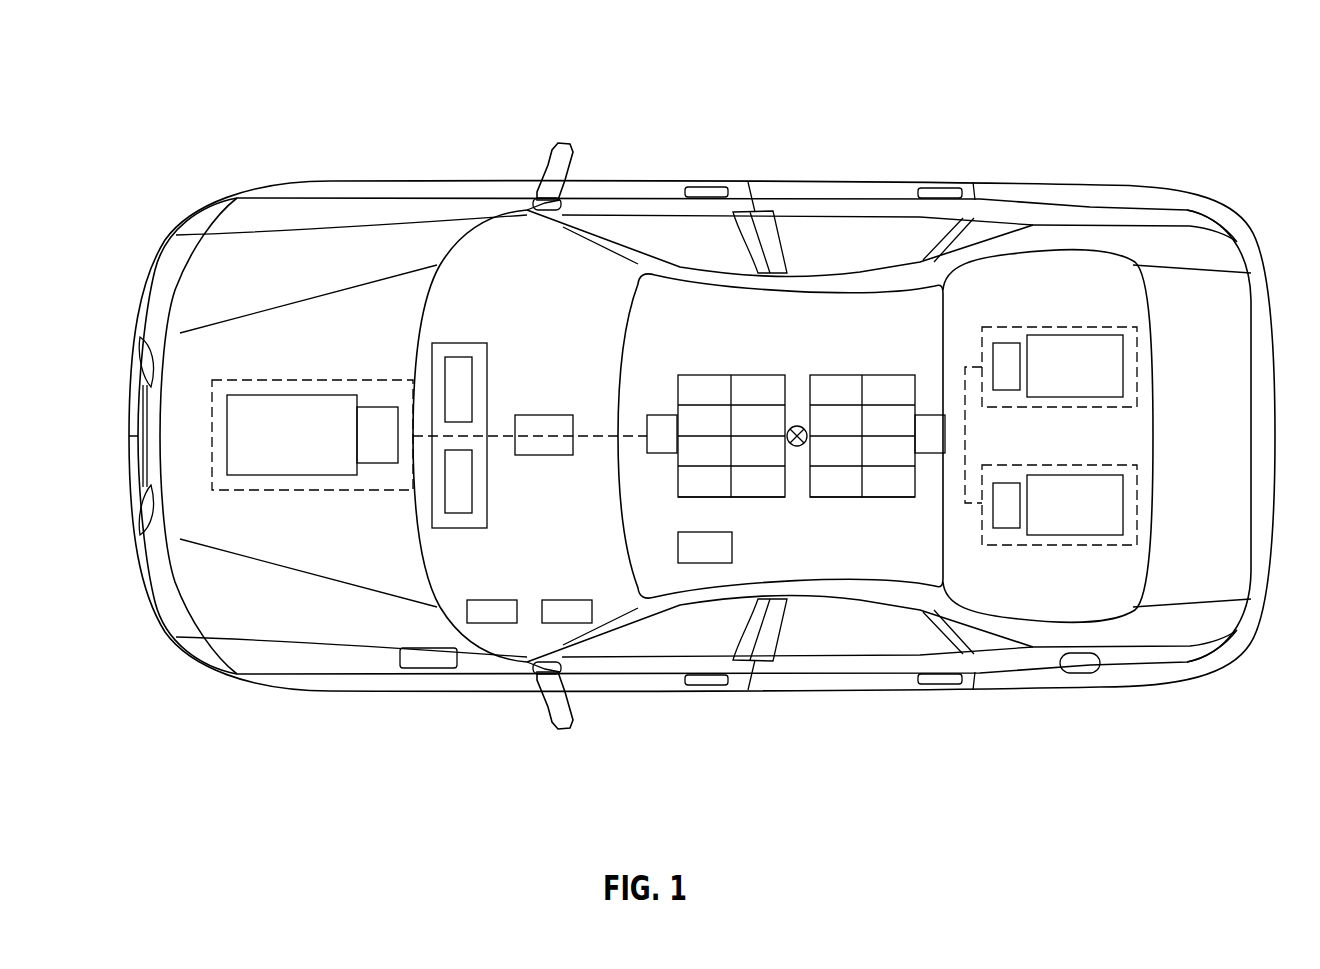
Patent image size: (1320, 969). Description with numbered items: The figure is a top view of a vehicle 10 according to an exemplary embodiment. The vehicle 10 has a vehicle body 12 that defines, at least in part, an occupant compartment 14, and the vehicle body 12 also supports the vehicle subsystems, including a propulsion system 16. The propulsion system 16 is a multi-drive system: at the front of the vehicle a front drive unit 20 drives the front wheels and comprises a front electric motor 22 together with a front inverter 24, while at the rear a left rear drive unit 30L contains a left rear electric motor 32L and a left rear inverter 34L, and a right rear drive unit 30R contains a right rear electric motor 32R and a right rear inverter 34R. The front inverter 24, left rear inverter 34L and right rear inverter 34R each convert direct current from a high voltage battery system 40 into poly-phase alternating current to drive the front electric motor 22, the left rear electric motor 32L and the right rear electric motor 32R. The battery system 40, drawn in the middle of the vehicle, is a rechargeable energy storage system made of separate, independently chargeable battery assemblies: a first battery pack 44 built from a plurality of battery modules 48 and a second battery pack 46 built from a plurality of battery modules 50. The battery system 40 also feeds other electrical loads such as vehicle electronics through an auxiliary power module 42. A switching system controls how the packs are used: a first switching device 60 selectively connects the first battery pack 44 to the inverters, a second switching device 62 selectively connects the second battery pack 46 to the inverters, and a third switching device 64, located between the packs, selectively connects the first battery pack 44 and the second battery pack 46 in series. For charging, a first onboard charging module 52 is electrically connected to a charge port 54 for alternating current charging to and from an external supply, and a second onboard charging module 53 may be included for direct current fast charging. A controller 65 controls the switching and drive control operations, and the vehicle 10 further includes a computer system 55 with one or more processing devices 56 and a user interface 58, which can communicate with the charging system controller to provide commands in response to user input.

The vehicle 10 is at (222, 77).
The vehicle body 12 is at (756, 173).
The occupant compartment 14 is at (823, 587).
The propulsion system 16 is at (282, 550).
The front drive unit 20 is at (342, 380).
The front electric motor 22 is at (290, 395).
The front inverter 24 is at (382, 463).
The right rear drive unit 30R is at (1137, 358).
The left rear drive unit 30L is at (1137, 497).
The right rear electric motor 32R is at (1075, 335).
The left rear electric motor 32L is at (1050, 535).
The right rear inverter 34R is at (998, 343).
The left rear inverter 34L is at (998, 528).
The battery system 40 is at (737, 530).
The auxiliary power module 42 is at (705, 532).
The first battery pack 44 is at (757, 497).
The second battery pack 46 is at (842, 497).
The battery modules 48 is at (755, 388).
The battery modules 50 is at (825, 388).
The first onboard charging module 52 is at (565, 600).
The second onboard charging module 53 is at (495, 600).
The charge port 54 is at (425, 648).
The computer system 55 is at (458, 316).
The processing devices 56 is at (473, 390).
The user interface 58 is at (473, 482).
The first switching device 60 is at (665, 415).
The second switching device 62 is at (937, 415).
The third switching device 64 is at (797, 446).
The controller 65 is at (538, 415).